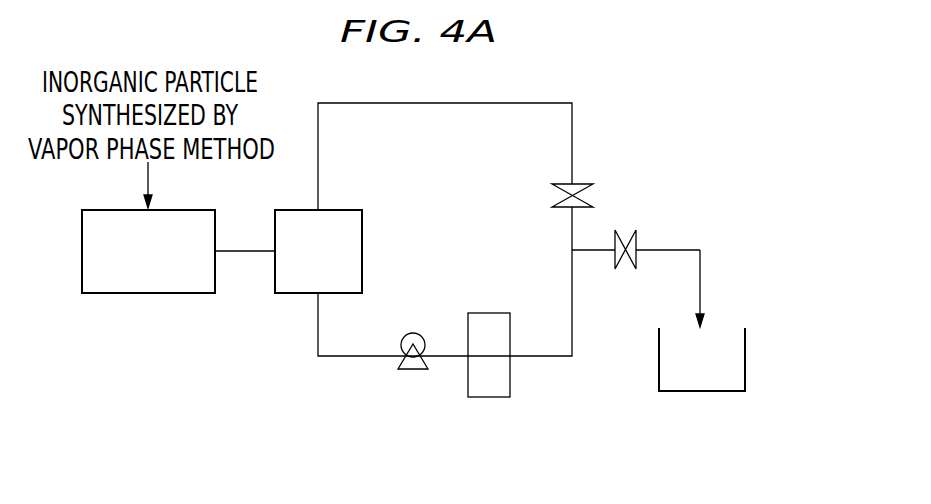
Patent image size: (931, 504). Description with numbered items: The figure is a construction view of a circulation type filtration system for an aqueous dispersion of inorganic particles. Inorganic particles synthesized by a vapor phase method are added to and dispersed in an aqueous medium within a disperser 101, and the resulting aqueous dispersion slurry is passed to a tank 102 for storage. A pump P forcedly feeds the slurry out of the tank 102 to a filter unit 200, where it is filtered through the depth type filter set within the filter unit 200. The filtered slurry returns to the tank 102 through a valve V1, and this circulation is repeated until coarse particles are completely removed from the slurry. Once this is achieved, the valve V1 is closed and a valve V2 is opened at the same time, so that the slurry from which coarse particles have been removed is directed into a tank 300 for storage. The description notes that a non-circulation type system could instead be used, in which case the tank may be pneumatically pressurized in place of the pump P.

The disperser 101 is at (160, 293).
The tank 102 is at (330, 210).
The filter unit 200 is at (488, 313).
The tank 300 is at (707, 391).
The valve V1 is at (560, 194).
The valve V2 is at (627, 258).
The pump P is at (409, 369).